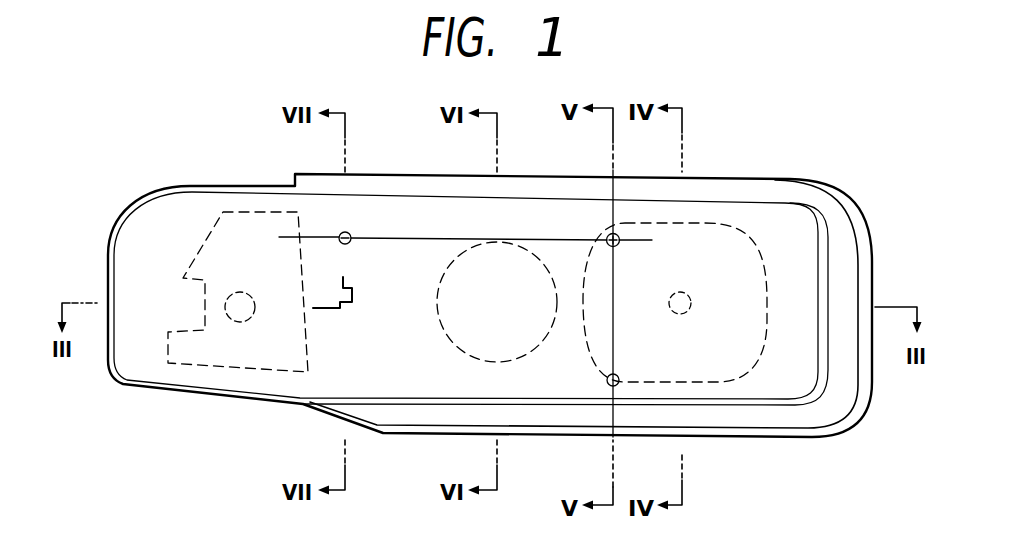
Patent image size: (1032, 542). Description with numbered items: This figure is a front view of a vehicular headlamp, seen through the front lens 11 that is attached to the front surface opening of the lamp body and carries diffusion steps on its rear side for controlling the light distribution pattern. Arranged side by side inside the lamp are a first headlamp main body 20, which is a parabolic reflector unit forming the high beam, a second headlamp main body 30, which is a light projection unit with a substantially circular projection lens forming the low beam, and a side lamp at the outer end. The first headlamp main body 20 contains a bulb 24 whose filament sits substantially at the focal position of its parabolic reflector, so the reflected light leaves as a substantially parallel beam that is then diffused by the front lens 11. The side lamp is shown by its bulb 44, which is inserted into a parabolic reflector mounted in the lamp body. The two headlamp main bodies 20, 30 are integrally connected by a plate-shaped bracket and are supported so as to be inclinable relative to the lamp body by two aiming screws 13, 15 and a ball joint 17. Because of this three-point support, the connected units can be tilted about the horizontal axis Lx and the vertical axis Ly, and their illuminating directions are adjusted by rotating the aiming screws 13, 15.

The front lens 11 is at (181, 216).
The aiming screw 13 is at (354, 224).
The aiming screw 15 is at (623, 397).
The ball joint 17 is at (602, 226).
The first headlamp main body 20 is at (726, 244).
The bulb 24 is at (678, 291).
The second headlamp main body 30 is at (463, 236).
The bulb 44 is at (241, 292).
The horizontal axis Lx is at (641, 236).
The vertical axis Ly is at (613, 350).